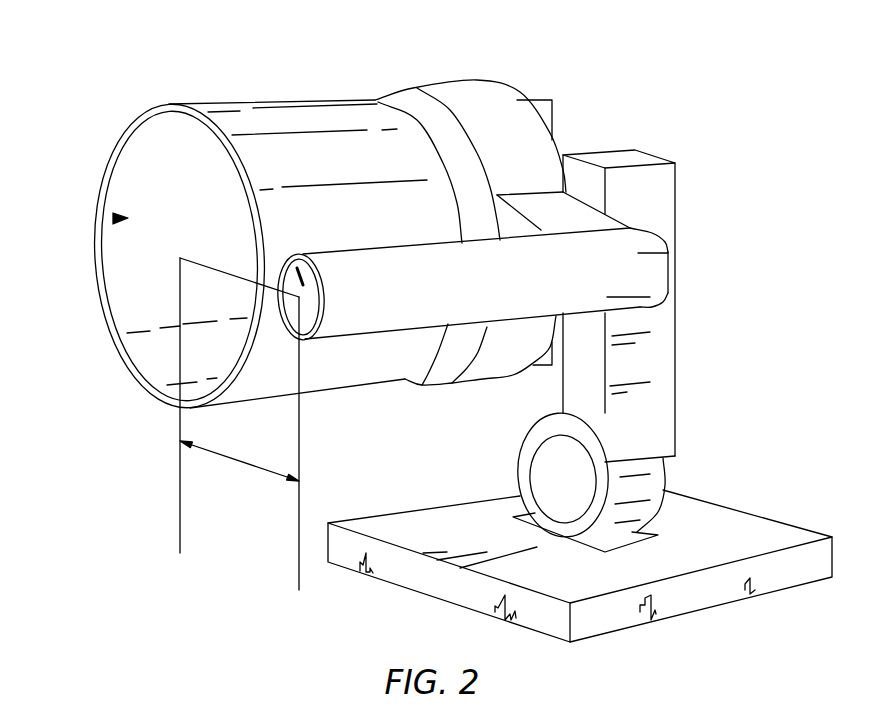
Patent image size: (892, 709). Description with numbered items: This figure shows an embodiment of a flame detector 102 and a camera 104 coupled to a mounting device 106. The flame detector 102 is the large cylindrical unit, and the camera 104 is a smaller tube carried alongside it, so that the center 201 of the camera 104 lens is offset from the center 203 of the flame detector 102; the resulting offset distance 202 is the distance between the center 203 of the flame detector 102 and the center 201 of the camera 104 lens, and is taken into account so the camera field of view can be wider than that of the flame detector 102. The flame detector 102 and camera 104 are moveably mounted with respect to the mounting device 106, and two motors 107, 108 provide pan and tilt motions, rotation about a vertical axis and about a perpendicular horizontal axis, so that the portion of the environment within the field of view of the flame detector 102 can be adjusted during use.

The flame detector 102 is at (267, 103).
The camera 104 is at (222, 272).
The mounting device 106 is at (712, 525).
The motor 107 is at (560, 478).
The motor 108 is at (465, 95).
The center of the camera 201 is at (290, 257).
The offset distance 202 is at (238, 465).
The center of the flame detector 203 is at (118, 219).